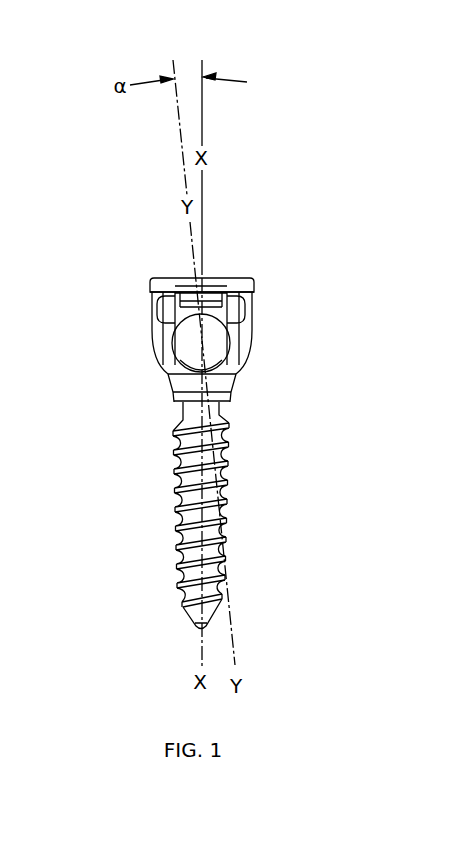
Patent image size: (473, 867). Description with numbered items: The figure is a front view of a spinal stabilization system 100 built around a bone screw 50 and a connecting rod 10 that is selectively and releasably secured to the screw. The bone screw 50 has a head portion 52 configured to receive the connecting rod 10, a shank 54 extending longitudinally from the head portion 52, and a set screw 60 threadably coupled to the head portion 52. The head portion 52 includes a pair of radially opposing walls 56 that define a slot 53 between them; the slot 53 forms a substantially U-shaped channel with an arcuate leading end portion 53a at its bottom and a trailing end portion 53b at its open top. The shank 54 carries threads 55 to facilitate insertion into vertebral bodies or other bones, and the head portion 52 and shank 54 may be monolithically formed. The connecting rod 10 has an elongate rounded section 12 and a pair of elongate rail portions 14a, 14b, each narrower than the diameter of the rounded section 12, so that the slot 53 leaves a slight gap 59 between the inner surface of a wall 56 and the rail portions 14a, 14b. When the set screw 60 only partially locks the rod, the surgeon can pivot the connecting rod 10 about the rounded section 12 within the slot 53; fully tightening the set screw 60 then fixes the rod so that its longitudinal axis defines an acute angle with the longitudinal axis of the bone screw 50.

The spinal stabilization system 100 is at (289, 282).
The connecting rod 10 is at (214, 346).
The bone screw 50 is at (177, 448).
The head portion 52 is at (176, 368).
The slot 53 is at (182, 362).
The leading end portion 53a is at (212, 373).
The trailing end portion 53b is at (172, 278).
The shank 54 is at (224, 473).
The threads 55 is at (221, 551).
The radially opposing walls 56 is at (149, 318).
The gap 59 is at (240, 278).
The set screw 60 is at (200, 278).
The elongate rail portion 14a is at (459, 542).
The elongate rounded section 12 is at (471, 665).
The elongate rail portion 14b is at (455, 723).